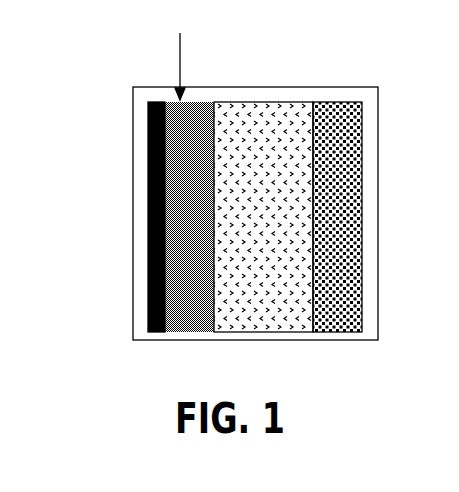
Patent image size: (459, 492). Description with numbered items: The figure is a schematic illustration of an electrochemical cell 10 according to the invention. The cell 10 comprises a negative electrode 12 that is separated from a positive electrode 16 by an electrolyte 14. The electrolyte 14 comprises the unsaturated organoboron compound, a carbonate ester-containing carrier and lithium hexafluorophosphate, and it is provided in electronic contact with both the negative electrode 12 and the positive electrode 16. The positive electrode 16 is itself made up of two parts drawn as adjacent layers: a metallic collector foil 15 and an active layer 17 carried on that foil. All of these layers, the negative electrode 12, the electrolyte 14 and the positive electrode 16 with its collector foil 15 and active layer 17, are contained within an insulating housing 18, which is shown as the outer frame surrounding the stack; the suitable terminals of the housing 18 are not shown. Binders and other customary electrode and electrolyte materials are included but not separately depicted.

The electrochemical cell 10 is at (233, 171).
The negative electrode 12 is at (345, 115).
The electrolyte 14 is at (247, 117).
The metallic collector foil 15 is at (150, 102).
The positive electrode 16 is at (180, 51).
The active layer 17 is at (198, 120).
The insulating housing 18 is at (380, 135).